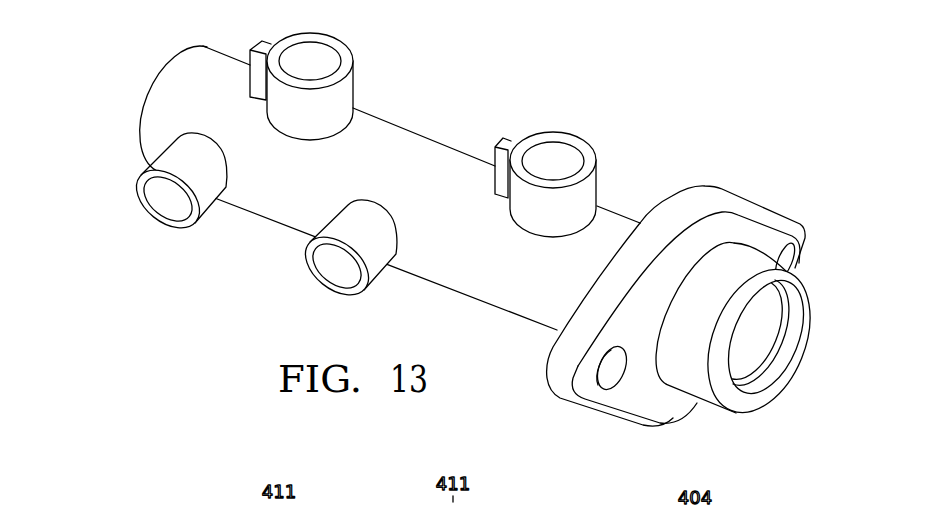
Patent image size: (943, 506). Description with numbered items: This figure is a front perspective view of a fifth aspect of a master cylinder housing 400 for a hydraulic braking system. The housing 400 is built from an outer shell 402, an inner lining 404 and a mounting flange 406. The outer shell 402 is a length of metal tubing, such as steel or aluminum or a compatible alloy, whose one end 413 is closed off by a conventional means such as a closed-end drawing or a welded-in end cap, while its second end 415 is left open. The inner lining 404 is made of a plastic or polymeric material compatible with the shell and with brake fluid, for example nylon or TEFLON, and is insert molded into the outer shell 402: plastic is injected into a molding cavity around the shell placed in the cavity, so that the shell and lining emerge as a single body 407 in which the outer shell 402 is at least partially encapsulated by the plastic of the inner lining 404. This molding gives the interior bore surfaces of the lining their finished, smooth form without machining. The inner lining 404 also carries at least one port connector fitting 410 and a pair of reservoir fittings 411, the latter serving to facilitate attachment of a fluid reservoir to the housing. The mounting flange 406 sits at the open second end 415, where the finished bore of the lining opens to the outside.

The master cylinder housing 400 is at (446, 253).
The outer shell 402 is at (435, 145).
The inner lining 404 is at (762, 337).
The mounting flange 406 is at (560, 380).
The single body 407 is at (290, 218).
The port connector fitting 410 is at (157, 215).
The reservoir fittings 411 is at (353, 80).
The one end 413 is at (152, 83).
The second end 415 is at (755, 395).